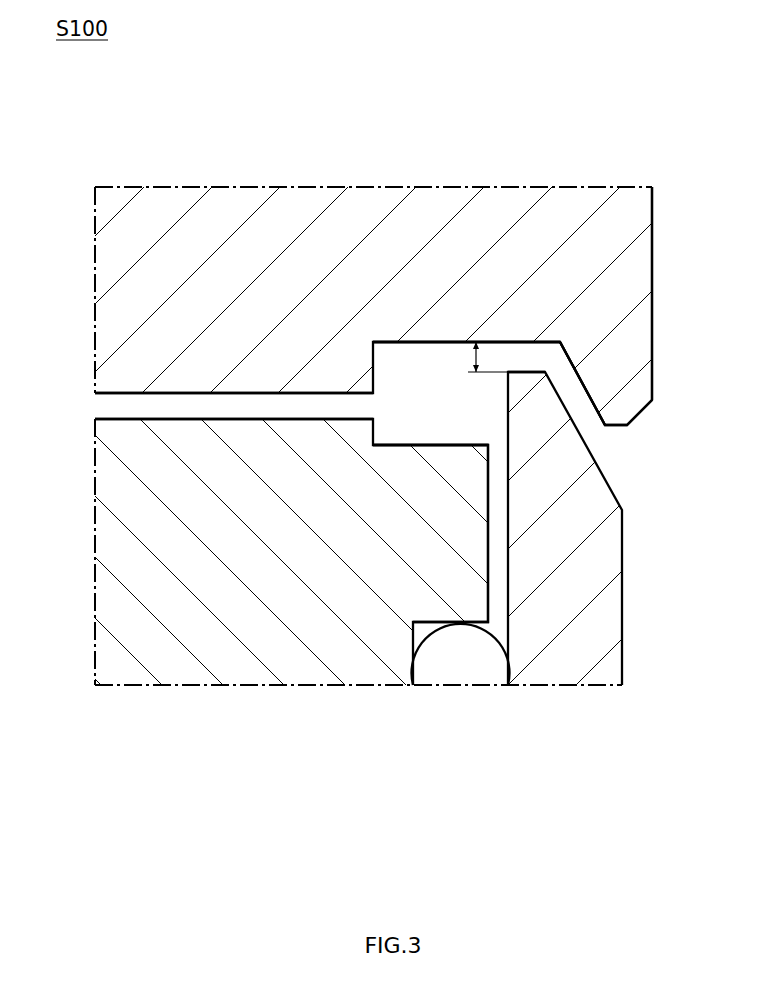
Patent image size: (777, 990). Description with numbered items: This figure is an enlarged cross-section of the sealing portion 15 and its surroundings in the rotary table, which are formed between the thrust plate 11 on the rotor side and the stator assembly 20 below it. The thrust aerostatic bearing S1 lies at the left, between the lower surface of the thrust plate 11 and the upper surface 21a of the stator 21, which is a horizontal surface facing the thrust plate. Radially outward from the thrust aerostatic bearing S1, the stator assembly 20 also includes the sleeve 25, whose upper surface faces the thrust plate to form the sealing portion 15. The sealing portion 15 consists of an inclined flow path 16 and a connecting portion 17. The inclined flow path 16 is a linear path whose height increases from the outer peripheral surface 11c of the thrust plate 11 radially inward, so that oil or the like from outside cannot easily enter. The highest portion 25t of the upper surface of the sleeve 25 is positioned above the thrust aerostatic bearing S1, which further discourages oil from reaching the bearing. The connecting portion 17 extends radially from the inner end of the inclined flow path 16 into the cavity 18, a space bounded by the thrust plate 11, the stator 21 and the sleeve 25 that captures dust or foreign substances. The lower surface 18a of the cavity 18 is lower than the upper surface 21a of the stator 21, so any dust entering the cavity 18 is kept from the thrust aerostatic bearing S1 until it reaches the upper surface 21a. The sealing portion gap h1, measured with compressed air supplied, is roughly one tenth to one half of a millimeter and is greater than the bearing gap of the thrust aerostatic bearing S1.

The thrust plate 11 is at (103, 258).
The outer peripheral surface of the thrust plate 11c is at (662, 262).
The sealing portion 15 is at (650, 113).
The inclined flow path 16 is at (573, 400).
The connecting portion 17 is at (535, 355).
The cavity 18 is at (395, 397).
The lower surface of the cavity 18a is at (450, 443).
The stator assembly 20 is at (362, 785).
The stator 21 is at (312, 662).
The upper surface of the stator 21a is at (187, 419).
The sleeve 25 is at (545, 672).
The highest portion of the upper surface of the sleeve 25t is at (525, 372).
The thrust aerostatic bearing S1 is at (108, 404).
The sealing portion gap h1 is at (472, 358).